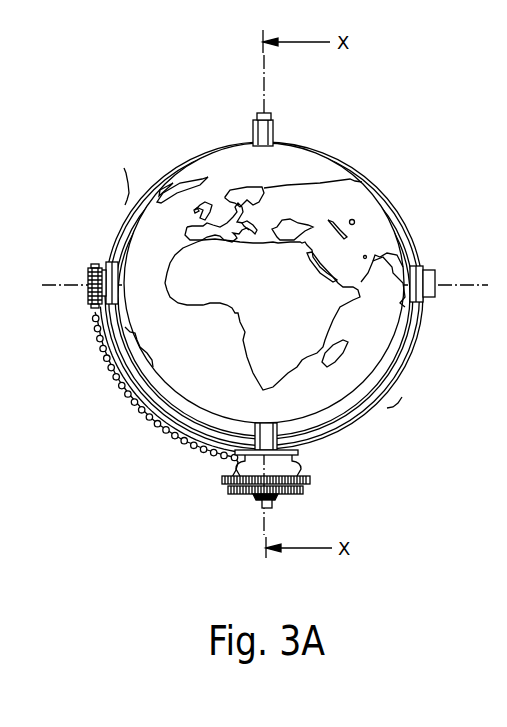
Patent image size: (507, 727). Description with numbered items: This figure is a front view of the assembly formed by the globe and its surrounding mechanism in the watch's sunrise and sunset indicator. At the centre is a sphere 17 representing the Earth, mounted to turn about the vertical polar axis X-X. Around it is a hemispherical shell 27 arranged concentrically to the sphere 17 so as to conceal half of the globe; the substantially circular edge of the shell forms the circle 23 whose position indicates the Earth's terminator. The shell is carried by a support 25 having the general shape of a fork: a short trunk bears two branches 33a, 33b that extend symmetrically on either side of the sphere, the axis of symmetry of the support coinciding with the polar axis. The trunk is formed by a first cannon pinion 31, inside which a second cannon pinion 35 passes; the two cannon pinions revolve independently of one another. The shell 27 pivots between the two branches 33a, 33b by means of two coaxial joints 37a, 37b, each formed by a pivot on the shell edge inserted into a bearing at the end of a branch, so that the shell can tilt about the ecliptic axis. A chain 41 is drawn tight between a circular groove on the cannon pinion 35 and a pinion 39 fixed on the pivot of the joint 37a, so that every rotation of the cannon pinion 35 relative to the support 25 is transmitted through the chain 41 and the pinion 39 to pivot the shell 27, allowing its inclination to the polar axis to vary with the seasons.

The sphere 17 is at (303, 158).
The circle 23 is at (137, 215).
The support 25 is at (178, 467).
The hemispherical shell 27 is at (274, 303).
The first cannon pinion 31 is at (222, 481).
The branch 33a is at (129, 391).
The branch 33b is at (393, 400).
The second cannon pinion 35 is at (306, 490).
The joint 37a is at (106, 258).
The joint 37b is at (423, 260).
The pinion 39 is at (88, 268).
The chain 41 is at (99, 345).